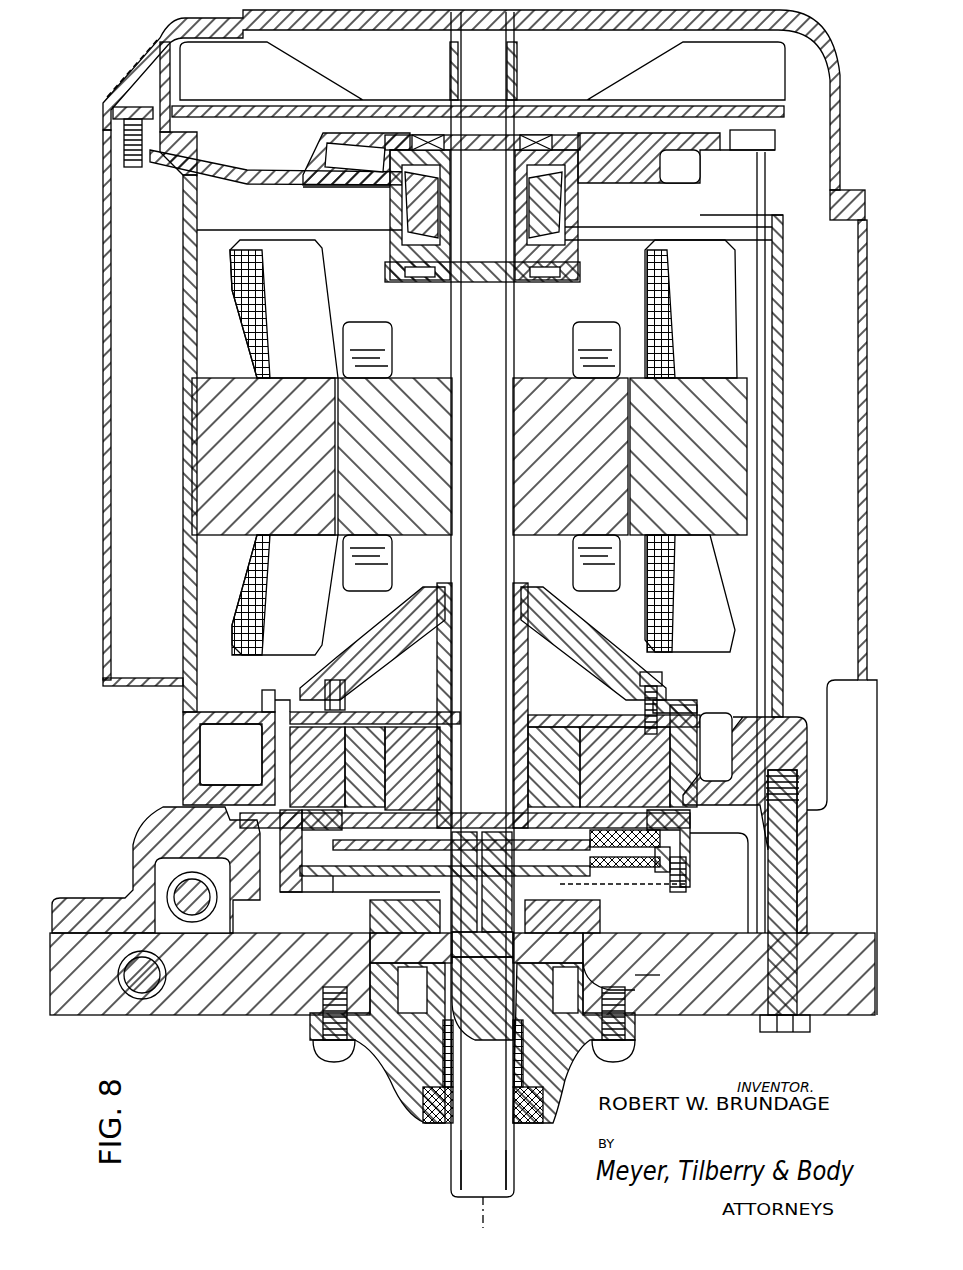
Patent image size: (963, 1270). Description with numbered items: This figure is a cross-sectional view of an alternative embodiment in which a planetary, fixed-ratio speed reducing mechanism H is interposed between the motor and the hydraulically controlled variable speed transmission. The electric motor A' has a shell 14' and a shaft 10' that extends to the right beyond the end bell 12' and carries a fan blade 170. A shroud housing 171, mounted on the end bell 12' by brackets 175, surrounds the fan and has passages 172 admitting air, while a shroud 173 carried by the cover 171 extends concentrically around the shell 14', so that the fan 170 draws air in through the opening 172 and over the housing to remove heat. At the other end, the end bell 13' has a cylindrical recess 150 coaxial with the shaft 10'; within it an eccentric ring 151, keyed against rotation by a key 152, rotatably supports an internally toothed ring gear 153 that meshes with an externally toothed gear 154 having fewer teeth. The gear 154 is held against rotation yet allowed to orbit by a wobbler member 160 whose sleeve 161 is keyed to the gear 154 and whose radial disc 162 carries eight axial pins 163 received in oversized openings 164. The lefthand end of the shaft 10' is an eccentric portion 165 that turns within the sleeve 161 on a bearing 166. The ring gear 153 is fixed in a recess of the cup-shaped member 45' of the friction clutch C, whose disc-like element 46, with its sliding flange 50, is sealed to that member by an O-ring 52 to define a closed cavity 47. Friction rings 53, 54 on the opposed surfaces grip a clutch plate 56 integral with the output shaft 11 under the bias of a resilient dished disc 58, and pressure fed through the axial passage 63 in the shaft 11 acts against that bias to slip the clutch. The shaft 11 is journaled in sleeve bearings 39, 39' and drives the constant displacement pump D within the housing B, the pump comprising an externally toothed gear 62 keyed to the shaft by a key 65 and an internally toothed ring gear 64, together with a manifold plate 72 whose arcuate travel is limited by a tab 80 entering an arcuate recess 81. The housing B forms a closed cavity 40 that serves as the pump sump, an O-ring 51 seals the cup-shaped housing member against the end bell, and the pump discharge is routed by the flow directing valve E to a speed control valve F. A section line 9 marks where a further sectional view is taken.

The fan blade 170 is at (290, 68).
The passages 172 is at (363, 32).
The shroud housing 171 is at (112, 128).
The shroud 173 is at (103, 490).
The shell 14' is at (171, 443).
The brackets 175 is at (180, 160).
The end bell 12' is at (525, 531).
The shaft 10' is at (482, 620).
The motor A' is at (449, 447).
The disc 162 is at (440, 690).
The eccentric portion 165 is at (485, 712).
The speed reducing mechanism H is at (377, 700).
The wobbler member 160 is at (570, 668).
The pins 163 is at (334, 665).
The openings 164 is at (315, 708).
The cylindrical recess 150 is at (275, 706).
The eccentric ring 151 is at (260, 706).
The key 152 is at (231, 754).
The end bell 13' is at (274, 686).
The section line 9 is at (252, 718).
The clutch member 45' is at (317, 767).
The internally toothed ring gear 153 is at (377, 790).
The externally toothed gear 154 is at (420, 792).
The sleeve 161 is at (475, 760).
The bearing 166 is at (465, 790).
The flange 50 is at (667, 838).
The friction ring 53 is at (632, 830).
The cavity 47 is at (662, 864).
The resilient disc 58 is at (675, 890).
The clutch plate 56 is at (625, 886).
The friction ring 54 is at (647, 890).
The friction clutch C is at (280, 856).
The O-ring 52 is at (327, 878).
The disc element 46 is at (360, 878).
The sleeve bearing 39 is at (464, 882).
The axial passage 63 is at (490, 870).
The internally toothed ring gear 64 is at (452, 955).
The manifold plate 72 is at (577, 963).
The flow directing valve E is at (176, 880).
The housing B is at (212, 1018).
The speed control valve F is at (155, 992).
The constant displacement pump D is at (413, 1020).
The externally toothed gear 62 is at (432, 1022).
The key 65 is at (460, 1040).
The sleeve bearing 39' is at (483, 1111).
The output shaft 11 is at (515, 1157).
The tab 80 is at (637, 985).
The arcuate recess 81 is at (637, 973).
The cavity 40 is at (713, 1015).
The O-ring 51 is at (752, 806).